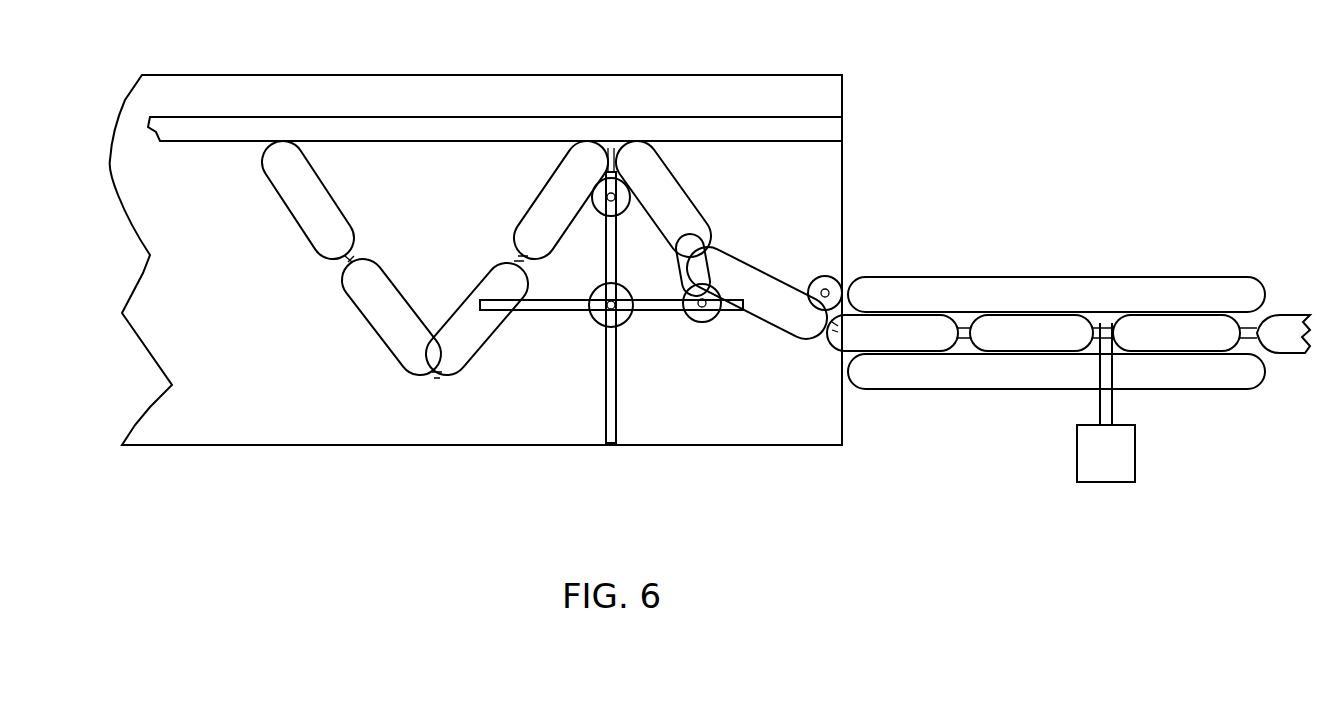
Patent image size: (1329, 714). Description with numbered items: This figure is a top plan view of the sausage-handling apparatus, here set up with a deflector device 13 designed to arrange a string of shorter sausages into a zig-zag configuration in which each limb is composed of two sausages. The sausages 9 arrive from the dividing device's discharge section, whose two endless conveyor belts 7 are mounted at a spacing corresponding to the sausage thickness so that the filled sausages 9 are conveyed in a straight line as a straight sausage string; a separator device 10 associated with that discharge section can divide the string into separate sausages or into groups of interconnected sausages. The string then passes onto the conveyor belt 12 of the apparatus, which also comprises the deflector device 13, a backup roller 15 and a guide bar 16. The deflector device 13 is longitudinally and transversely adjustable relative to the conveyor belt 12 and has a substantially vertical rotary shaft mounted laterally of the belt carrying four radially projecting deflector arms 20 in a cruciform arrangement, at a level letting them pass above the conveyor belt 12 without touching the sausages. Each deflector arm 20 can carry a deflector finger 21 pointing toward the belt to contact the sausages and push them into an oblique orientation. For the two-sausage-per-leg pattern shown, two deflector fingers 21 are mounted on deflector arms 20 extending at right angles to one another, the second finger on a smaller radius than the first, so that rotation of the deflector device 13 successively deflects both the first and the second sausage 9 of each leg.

The endless conveyor belts 7 is at (1085, 297).
The sausages 9 is at (1042, 330).
The separator device 10 is at (1117, 457).
The conveyor belt 12 is at (773, 162).
The deflector device 13 is at (562, 360).
The backup roller 15 is at (832, 280).
The guide bar 16 is at (418, 128).
The deflector arms 20 is at (655, 302).
The deflector fingers 21 is at (622, 208).